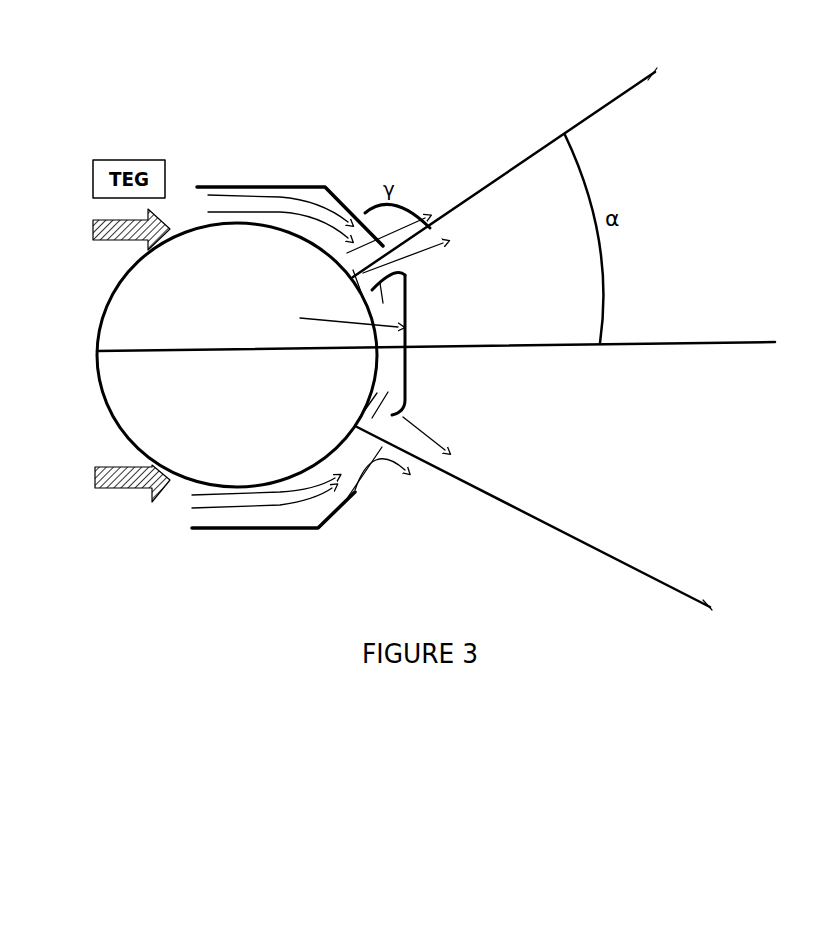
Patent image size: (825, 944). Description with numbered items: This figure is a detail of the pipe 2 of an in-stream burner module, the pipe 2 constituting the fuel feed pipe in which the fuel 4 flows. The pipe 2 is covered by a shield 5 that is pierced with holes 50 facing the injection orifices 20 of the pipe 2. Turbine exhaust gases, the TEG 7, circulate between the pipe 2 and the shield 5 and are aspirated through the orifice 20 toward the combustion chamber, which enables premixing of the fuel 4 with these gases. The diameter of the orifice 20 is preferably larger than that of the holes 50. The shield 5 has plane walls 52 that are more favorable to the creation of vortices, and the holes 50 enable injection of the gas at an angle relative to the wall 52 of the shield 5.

The pipe 2 is at (105, 415).
The fuel 4 is at (612, 101).
The shield 5 is at (244, 185).
The TEG 7 is at (108, 245).
The injection orifice 20 is at (355, 430).
The hole 50 is at (383, 246).
The plane wall 52 is at (398, 412).